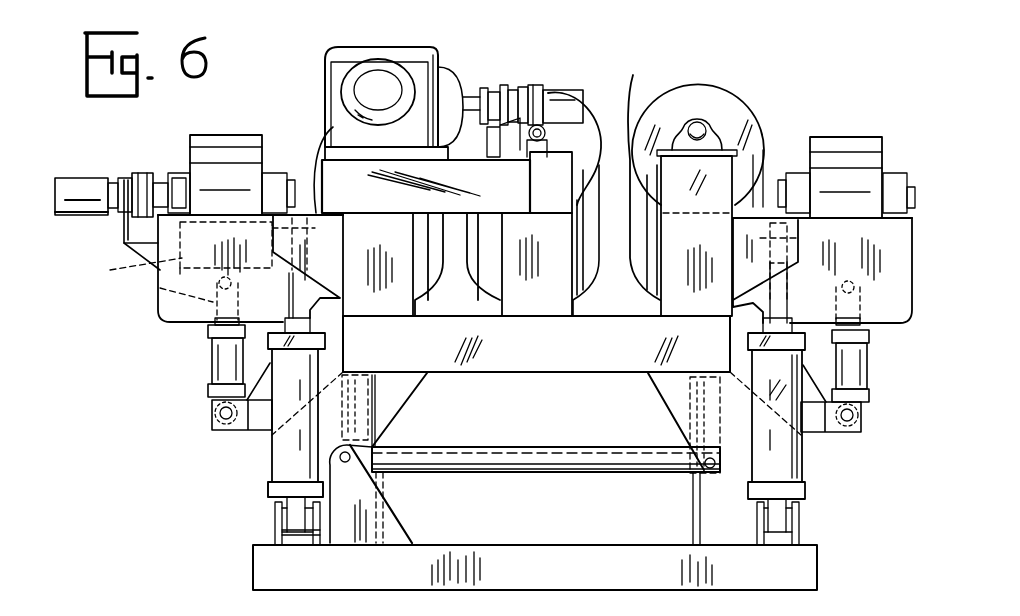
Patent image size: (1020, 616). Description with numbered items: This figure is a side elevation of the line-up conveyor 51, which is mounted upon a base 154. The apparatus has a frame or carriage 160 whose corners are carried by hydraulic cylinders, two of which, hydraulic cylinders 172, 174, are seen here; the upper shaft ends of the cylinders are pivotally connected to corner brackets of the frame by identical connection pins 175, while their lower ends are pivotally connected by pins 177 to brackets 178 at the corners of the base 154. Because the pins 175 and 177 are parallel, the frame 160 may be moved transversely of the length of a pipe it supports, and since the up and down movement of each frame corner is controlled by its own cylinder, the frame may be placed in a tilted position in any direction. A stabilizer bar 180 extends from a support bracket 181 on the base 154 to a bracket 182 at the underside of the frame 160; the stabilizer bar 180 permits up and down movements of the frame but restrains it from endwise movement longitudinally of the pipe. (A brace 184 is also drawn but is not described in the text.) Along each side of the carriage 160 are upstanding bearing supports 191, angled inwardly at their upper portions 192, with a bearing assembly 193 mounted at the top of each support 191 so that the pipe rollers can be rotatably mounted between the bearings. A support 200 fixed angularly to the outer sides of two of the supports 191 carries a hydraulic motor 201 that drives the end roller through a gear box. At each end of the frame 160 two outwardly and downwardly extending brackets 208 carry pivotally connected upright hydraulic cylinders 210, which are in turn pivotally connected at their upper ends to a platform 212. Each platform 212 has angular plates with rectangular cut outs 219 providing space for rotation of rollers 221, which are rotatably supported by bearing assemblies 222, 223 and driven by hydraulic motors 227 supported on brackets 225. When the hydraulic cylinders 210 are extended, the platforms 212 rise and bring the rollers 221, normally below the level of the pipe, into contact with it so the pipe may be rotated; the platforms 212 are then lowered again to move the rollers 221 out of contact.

The line-up conveyor 51 is at (252, 499).
The base 154 is at (817, 572).
The frame or carriage 160 is at (529, 391).
The hydraulic cylinder 172 is at (270, 455).
The hydraulic cylinder 174 is at (805, 463).
The connection pin 175 is at (800, 227).
The pin 177 is at (278, 536).
The bracket 178 is at (800, 535).
The stabilizer bar 180 is at (560, 476).
The support bracket 181 is at (397, 508).
The bracket 182 is at (664, 402).
The left brace 184 is at (397, 418).
The bearing support 191 is at (665, 300).
The upper portion 192 is at (634, 79).
The bearing assembly 193 is at (707, 118).
The support 200 is at (320, 160).
The hydraulic motor 201 is at (548, 93).
The bracket 208 is at (850, 433).
The upright hydraulic cylinder 210 is at (868, 372).
The platform 212 is at (912, 323).
The rectangular cut out 219 is at (110, 270).
The roller 221 is at (843, 137).
The bearing assembly 222 is at (143, 175).
The bearing assembly 223 is at (313, 188).
The bracket 225 is at (123, 231).
The hydraulic motor 227 is at (72, 178).